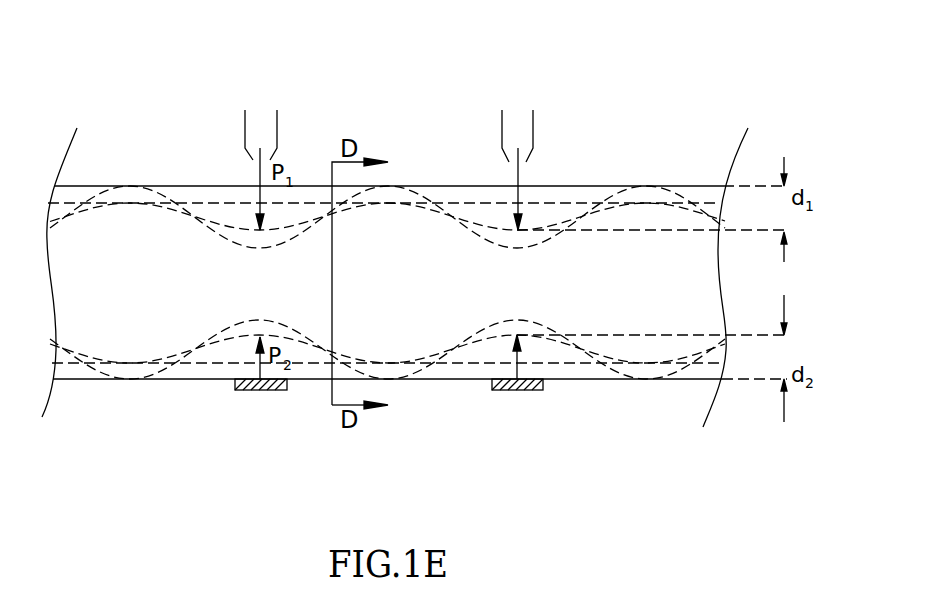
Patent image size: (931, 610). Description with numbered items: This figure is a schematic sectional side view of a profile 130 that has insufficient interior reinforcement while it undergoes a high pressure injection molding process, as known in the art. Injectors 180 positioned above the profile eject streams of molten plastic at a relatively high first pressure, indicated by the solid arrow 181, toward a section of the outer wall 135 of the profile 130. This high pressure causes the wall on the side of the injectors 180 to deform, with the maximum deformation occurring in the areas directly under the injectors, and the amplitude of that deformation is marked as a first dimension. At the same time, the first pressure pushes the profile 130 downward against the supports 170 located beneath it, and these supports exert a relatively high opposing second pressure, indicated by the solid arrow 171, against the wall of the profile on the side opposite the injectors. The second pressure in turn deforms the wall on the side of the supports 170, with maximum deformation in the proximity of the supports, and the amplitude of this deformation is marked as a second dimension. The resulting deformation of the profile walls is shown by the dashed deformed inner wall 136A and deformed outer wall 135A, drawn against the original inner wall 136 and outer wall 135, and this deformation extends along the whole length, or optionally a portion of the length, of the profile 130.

The profile 130 is at (225, 197).
The outer wall 135 is at (592, 187).
The inner wall 136 is at (553, 204).
The deformed outer wall 135A is at (178, 197).
The deformed inner wall 136A is at (197, 222).
The support 170 is at (260, 390).
The arrow indicating pressure P2 171 is at (535, 368).
The injector 180 is at (277, 127).
The arrow indicating pressure P1 181 is at (513, 177).